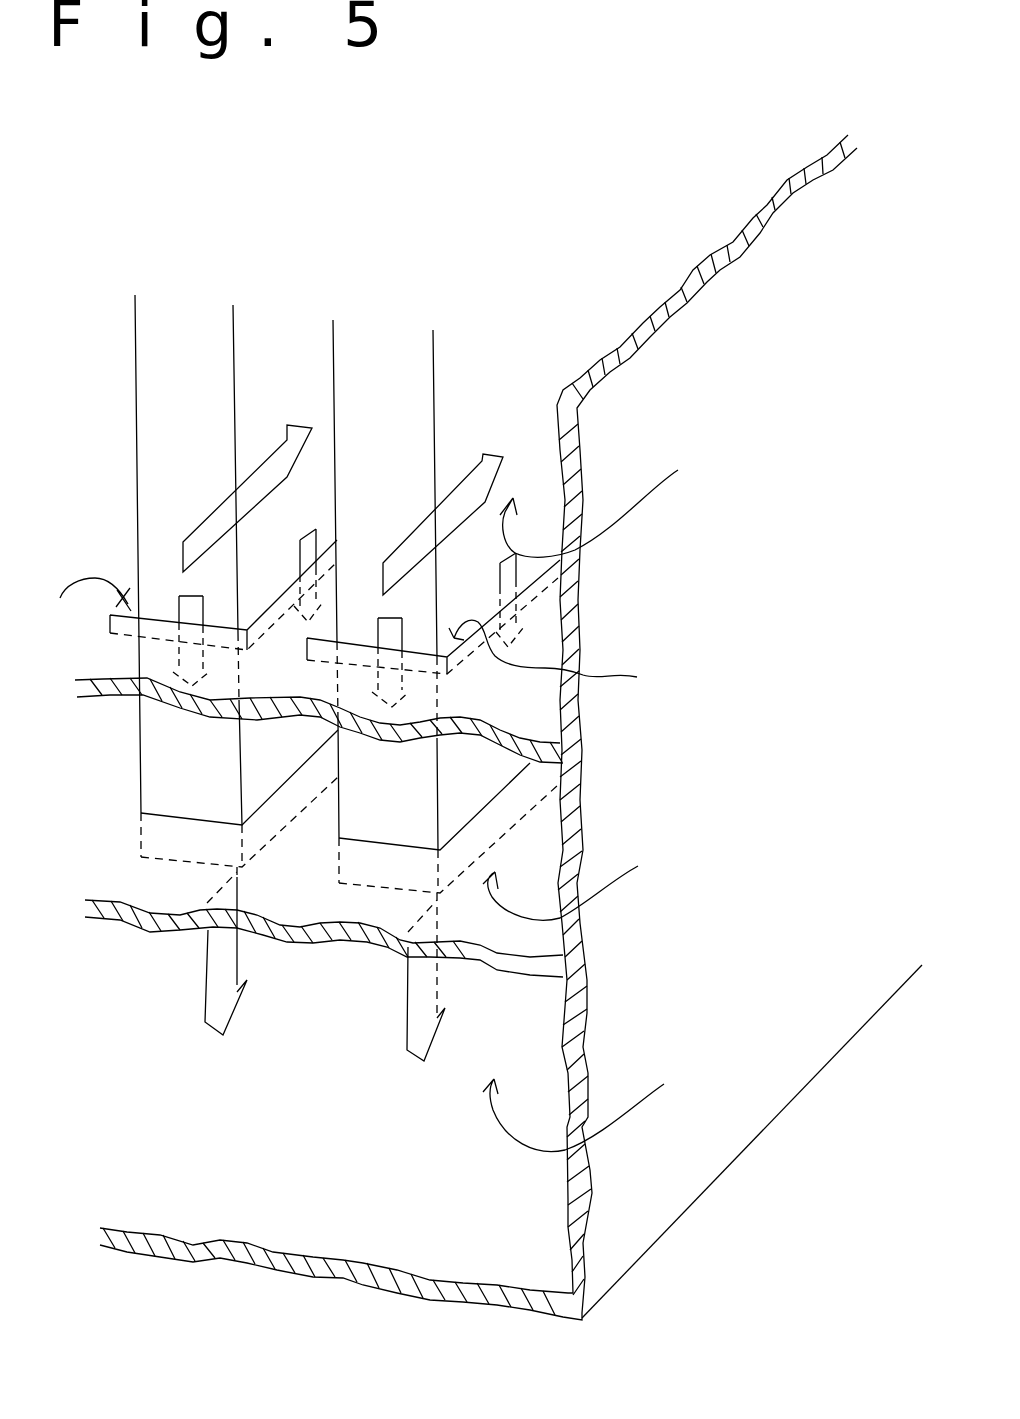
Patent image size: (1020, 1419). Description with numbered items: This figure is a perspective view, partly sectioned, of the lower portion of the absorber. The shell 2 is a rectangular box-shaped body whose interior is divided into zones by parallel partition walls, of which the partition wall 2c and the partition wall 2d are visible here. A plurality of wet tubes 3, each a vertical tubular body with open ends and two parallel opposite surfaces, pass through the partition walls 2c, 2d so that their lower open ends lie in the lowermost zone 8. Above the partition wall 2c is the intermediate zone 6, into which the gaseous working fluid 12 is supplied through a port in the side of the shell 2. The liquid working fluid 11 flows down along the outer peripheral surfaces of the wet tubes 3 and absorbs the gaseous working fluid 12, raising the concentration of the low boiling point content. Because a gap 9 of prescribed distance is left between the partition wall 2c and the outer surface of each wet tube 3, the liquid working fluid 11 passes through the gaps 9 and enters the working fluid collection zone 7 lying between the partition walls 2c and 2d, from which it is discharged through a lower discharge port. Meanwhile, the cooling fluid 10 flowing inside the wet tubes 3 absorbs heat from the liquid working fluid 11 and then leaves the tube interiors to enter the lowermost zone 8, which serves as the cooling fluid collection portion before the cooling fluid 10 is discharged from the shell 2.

The shell 2 is at (687, 623).
The partition wall 2c is at (522, 703).
The partition wall 2d is at (300, 904).
The wet tube 3 is at (193, 487).
The intermediate zone 6 is at (598, 501).
The working fluid collection zone 7 is at (570, 883).
The lowermost zone 8 is at (583, 1109).
The gap 9 is at (348, 635).
The cooling fluid 10 is at (407, 1029).
The liquid working fluid 11 is at (188, 603).
The gaseous working fluid 12 is at (200, 538).